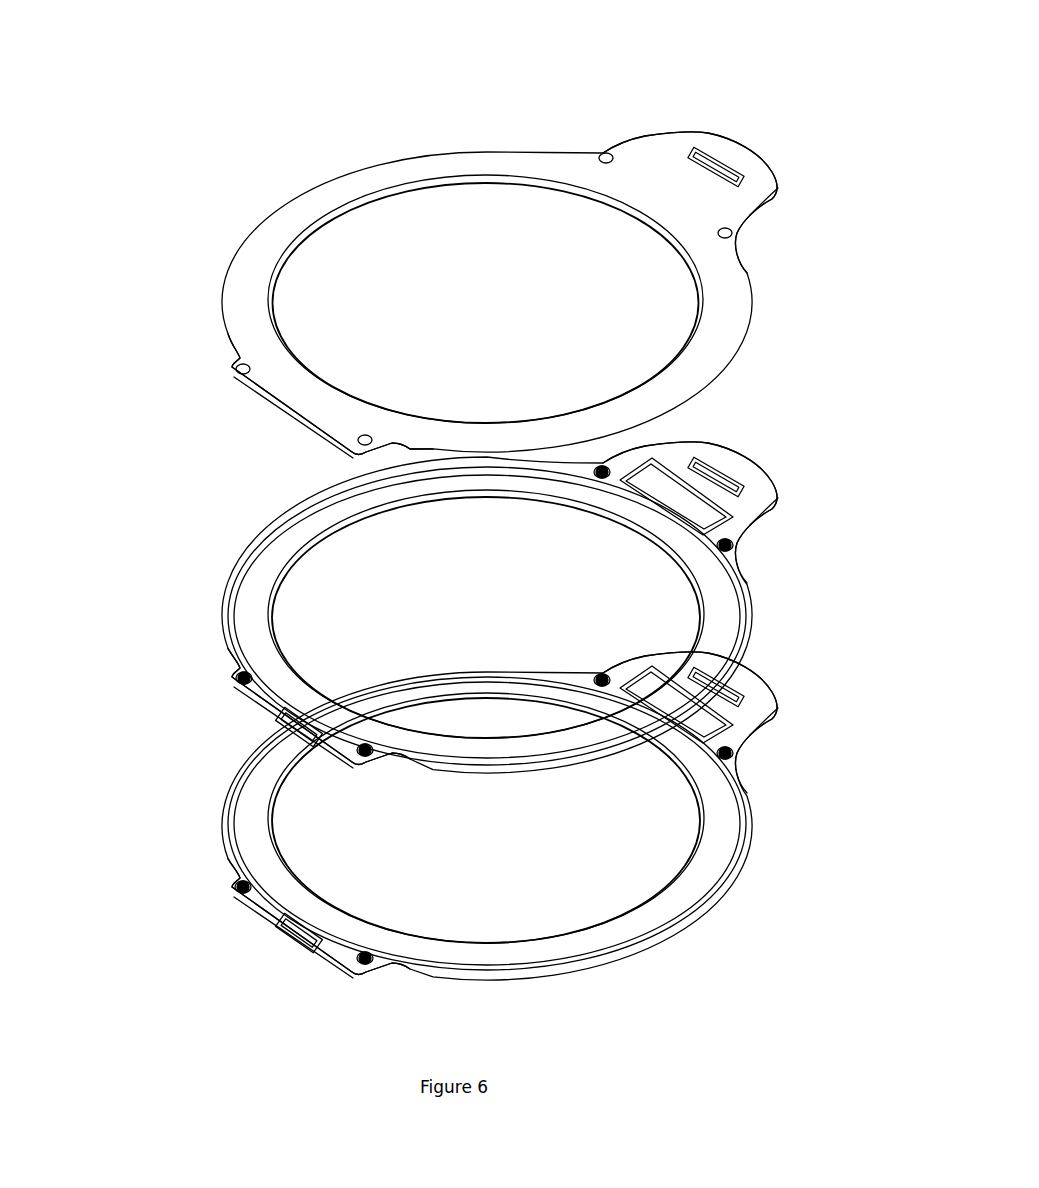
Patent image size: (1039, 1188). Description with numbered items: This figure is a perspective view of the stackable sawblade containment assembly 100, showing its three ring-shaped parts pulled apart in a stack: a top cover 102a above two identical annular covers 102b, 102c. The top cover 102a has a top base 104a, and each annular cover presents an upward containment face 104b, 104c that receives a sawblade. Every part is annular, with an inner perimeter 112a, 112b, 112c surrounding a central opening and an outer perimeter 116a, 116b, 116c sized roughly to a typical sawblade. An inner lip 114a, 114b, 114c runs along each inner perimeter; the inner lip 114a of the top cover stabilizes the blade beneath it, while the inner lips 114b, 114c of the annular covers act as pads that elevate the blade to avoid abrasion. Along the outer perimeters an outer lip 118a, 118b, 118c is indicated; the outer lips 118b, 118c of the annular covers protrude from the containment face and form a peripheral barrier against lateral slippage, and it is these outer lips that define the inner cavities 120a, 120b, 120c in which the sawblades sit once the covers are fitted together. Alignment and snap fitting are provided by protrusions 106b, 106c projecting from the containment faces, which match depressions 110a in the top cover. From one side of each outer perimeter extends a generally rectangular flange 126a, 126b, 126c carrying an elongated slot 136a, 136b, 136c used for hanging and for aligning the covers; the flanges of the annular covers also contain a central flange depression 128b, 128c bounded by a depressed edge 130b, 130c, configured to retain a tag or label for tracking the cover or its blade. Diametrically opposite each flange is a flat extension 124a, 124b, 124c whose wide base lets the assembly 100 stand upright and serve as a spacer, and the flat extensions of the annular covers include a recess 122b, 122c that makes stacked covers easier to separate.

The stackable sawblade containment assembly 100 is at (470, 553).
The top cover 102a is at (485, 286).
The annular cover 102b is at (470, 621).
The annular cover 102c is at (454, 810).
The top base 104a is at (455, 295).
The containment face 104b is at (479, 614).
The containment face 104c is at (383, 818).
The protrusion 106b is at (605, 468).
The protrusion 106c is at (602, 670).
The depression 110a is at (610, 152).
The inner perimeter 112a is at (485, 299).
The inner perimeter 112b is at (486, 614).
The inner perimeter 112c is at (486, 818).
The inner lip 114a is at (545, 190).
The inner lip 114b is at (430, 493).
The inner lip 114c is at (643, 905).
The outer perimeter 116a is at (516, 279).
The outer perimeter 116b is at (480, 607).
The outer perimeter 116c is at (540, 813).
The outer surface of first layer 118a is at (695, 397).
The outer lip 118b is at (480, 607).
The outer lip 118c is at (526, 813).
The inner cavity 120a is at (690, 887).
The inner cavity 120b is at (722, 606).
The inner cavity 120c is at (526, 801).
The recess 122b is at (297, 730).
The recess 122c is at (283, 940).
The flat extension 124a is at (280, 405).
The flat extension 124b is at (271, 739).
The flat extension 124c is at (284, 935).
The flange 126a is at (746, 191).
The flange 126b is at (754, 502).
The flange 126c is at (740, 711).
The flange depression 128b is at (774, 497).
The flange depression 128c is at (708, 658).
The depressed edge 130b is at (745, 497).
The depressed edge 130c is at (640, 663).
The elongated slot 136a is at (733, 148).
The elongated slot 136b is at (740, 462).
The elongated slot 136c is at (735, 678).